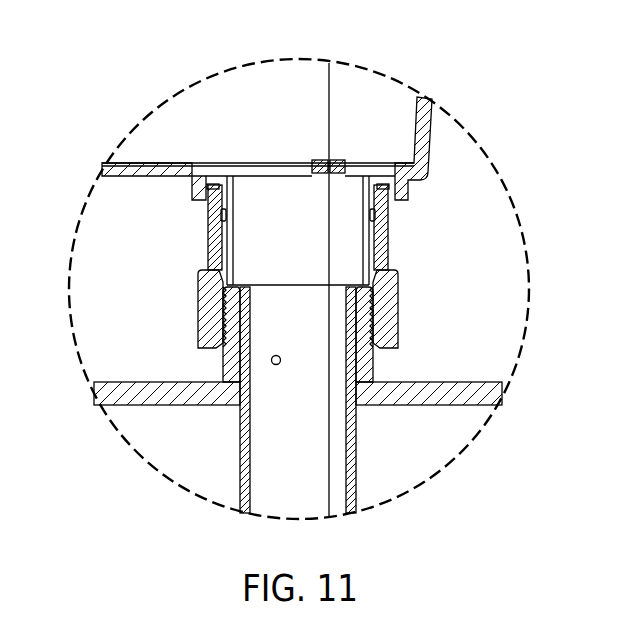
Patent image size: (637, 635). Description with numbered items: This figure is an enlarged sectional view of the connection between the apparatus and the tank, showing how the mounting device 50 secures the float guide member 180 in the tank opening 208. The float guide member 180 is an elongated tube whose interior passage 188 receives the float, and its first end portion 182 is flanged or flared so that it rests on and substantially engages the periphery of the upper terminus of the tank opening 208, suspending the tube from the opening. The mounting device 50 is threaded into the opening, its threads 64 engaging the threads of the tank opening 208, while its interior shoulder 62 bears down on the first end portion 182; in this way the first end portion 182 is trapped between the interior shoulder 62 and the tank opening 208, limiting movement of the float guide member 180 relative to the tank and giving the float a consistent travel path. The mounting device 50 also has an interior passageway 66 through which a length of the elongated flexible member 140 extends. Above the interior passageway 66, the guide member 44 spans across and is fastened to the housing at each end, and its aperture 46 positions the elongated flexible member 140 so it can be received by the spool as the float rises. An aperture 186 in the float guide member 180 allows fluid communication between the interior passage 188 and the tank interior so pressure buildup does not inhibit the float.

The guide member 44 is at (341, 148).
The aperture 46 is at (318, 158).
The interior passageway 66 is at (252, 190).
The first end portion 182 is at (238, 286).
The mounting device 50 is at (193, 303).
The threaded portion 64 is at (220, 320).
The interior shoulder 62 is at (377, 304).
The float guide member 180 is at (356, 465).
The interior passage 188 is at (335, 428).
The tank opening 208 is at (382, 367).
The aperture 186 is at (277, 365).
The elongated flexible member 140 is at (329, 472).